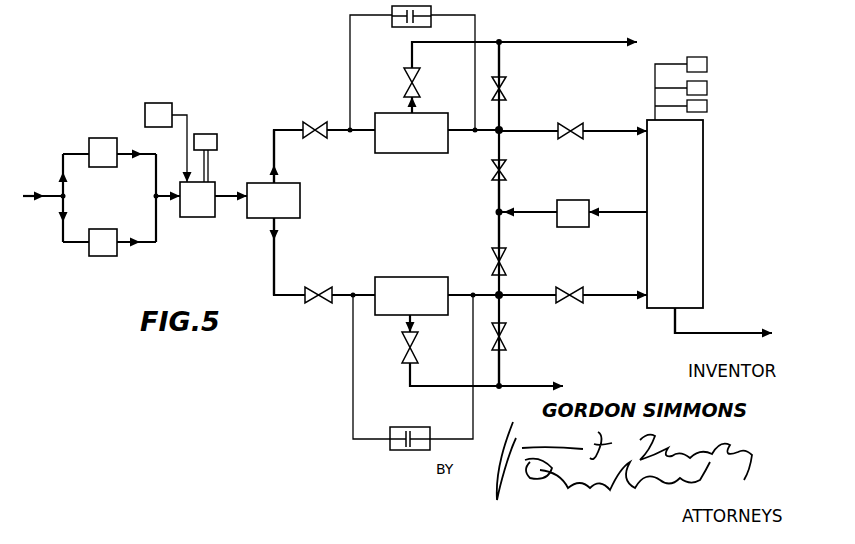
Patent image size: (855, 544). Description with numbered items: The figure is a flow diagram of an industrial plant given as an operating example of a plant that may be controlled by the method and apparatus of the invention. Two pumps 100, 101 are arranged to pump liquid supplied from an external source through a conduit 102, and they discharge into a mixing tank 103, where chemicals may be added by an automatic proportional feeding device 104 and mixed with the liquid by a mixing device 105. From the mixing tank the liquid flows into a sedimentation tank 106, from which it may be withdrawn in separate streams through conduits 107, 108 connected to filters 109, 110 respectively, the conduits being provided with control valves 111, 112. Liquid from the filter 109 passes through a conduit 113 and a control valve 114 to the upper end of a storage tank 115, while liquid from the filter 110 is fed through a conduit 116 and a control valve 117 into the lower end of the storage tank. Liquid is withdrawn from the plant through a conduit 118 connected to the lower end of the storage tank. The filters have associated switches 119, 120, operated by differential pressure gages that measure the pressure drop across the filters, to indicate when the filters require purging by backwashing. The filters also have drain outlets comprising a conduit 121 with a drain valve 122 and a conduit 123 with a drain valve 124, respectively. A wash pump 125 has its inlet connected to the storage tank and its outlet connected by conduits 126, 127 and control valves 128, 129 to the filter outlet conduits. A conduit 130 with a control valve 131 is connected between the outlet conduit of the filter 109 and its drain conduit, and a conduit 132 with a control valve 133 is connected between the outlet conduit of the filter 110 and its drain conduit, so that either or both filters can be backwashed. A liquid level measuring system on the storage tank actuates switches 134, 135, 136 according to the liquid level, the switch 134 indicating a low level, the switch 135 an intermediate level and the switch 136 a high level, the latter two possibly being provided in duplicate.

The pump 100 is at (102, 139).
The pump 101 is at (102, 257).
The conduit 102 is at (41, 200).
The mixing tank 103 is at (200, 217).
The automatic proportional feeding device 104 is at (161, 103).
The mixing device 105 is at (208, 134).
The sedimentation tank 106 is at (300, 196).
The conduit 107 is at (276, 156).
The conduit 108 is at (273, 256).
The filter 109 is at (411, 145).
The filter 110 is at (407, 277).
The control valve 111 is at (315, 122).
The control valve 112 is at (318, 289).
The conduit 113 is at (528, 129).
The control valve 114 is at (577, 117).
The storage tank 115 is at (703, 217).
The conduit 116 is at (530, 293).
The control valve 117 is at (568, 308).
The conduit 118 is at (728, 332).
The switch 119 is at (400, 29).
The switch 120 is at (400, 451).
The conduit 121 is at (546, 42).
The drain valve 122 is at (403, 84).
The conduit 123 is at (425, 387).
The drain valve 124 is at (402, 348).
The wash pump 125 is at (573, 200).
The conduit 126 is at (499, 198).
The conduit 127 is at (499, 231).
The control valve 128 is at (506, 171).
The control valve 129 is at (494, 262).
The conduit 130 is at (506, 60).
The control valve 131 is at (506, 88).
The conduit 132 is at (506, 368).
The control valve 133 is at (506, 338).
The switch 134 is at (707, 105).
The switch 135 is at (707, 87).
The switch 136 is at (707, 64).